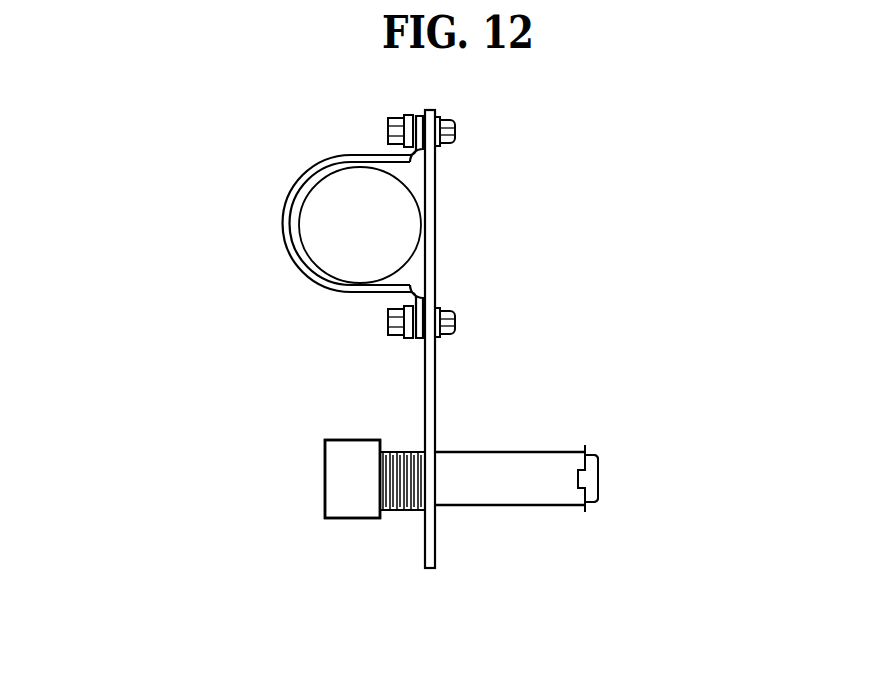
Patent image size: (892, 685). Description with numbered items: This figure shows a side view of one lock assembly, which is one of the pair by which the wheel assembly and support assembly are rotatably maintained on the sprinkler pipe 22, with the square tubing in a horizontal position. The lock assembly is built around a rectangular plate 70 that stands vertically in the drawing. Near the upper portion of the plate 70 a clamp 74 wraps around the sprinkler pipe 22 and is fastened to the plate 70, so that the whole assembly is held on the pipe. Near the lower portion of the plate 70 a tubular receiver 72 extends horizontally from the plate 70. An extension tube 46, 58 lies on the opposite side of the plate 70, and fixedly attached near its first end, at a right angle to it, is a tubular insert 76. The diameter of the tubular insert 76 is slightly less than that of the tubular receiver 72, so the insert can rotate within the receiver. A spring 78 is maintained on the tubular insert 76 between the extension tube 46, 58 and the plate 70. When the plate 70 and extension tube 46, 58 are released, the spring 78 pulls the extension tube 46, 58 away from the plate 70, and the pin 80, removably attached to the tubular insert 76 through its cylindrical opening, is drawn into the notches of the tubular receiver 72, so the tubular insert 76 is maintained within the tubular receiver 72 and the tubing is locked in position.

The sprinkler pipe 22 is at (325, 248).
The extension tube 46 is at (332, 484).
The extension tube 58 is at (352, 479).
The plate 70 is at (432, 378).
The tubular receiver 72 is at (480, 503).
The clamp 74 is at (307, 178).
The tubular insert 76 is at (592, 495).
The spring 78 is at (398, 514).
The pin 80 is at (585, 443).